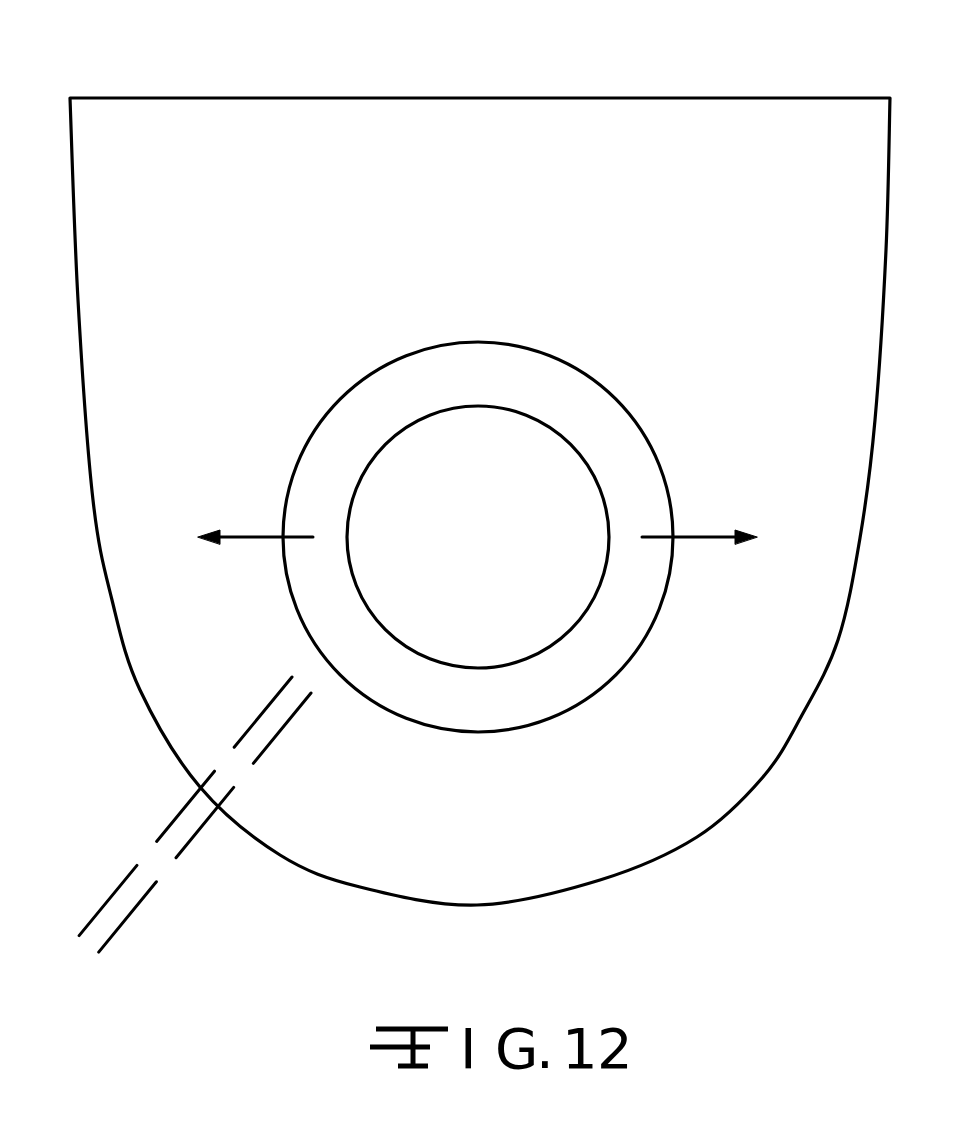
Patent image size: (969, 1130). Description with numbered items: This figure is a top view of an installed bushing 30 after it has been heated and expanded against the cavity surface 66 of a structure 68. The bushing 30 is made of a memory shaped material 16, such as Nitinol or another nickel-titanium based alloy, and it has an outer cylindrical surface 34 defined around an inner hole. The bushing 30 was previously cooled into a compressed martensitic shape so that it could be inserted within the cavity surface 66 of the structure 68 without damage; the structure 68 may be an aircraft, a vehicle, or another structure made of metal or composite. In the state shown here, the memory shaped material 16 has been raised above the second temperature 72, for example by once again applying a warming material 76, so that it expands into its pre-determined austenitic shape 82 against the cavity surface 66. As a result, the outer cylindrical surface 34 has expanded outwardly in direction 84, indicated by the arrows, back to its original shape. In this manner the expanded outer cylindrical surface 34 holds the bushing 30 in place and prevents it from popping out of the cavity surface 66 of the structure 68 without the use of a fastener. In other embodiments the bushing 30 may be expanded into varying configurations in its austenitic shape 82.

The structure 68 is at (763, 188).
The bushing 30 is at (479, 491).
The memory shaped material 16 is at (479, 505).
The second temperature 72 is at (479, 510).
The outer cylindrical surface 34 is at (479, 537).
The pre-determined austenitic shape 82 is at (520, 537).
The cavity surface 66 is at (660, 618).
The direction 84 is at (255, 537).
The warming material 76 is at (268, 707).